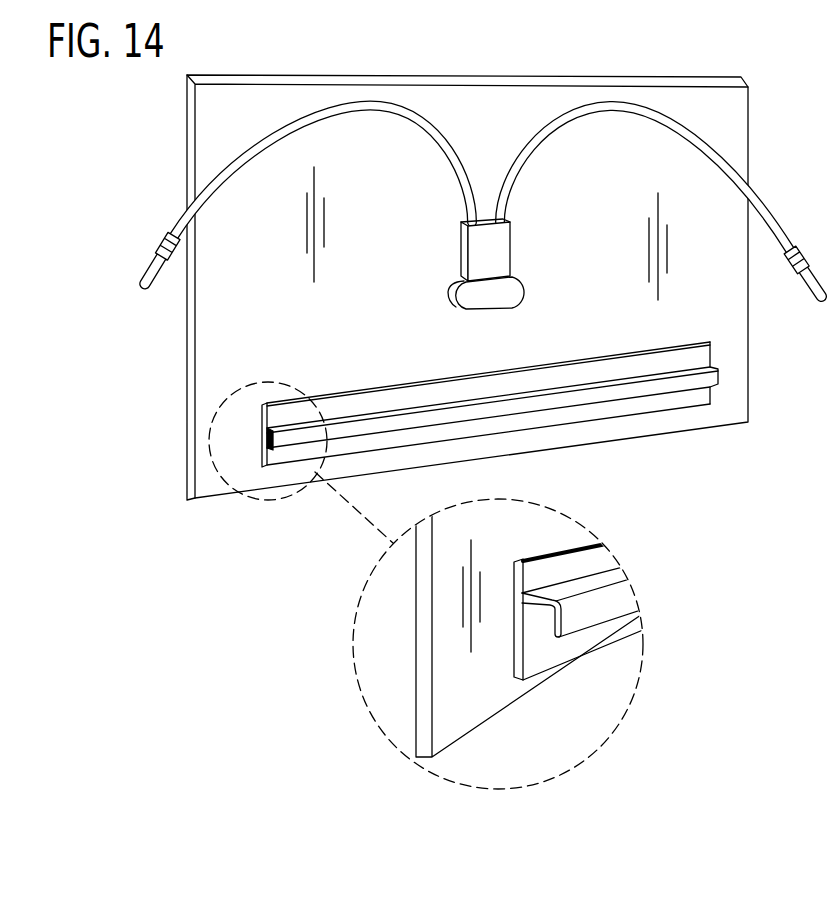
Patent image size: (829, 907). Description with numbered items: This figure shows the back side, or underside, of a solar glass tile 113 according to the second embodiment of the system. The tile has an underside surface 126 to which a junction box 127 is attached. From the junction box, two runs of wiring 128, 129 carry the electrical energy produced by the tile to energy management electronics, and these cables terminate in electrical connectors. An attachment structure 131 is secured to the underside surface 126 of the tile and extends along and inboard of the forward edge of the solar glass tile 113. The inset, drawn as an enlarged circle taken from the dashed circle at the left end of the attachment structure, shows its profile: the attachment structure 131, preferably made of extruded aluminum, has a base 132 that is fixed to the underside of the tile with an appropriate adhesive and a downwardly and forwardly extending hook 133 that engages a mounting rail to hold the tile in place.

The solar glass tile 113 is at (483, 255).
The underside surface 126 is at (313, 339).
The junction box 127 is at (483, 252).
The wiring 128 is at (623, 110).
The wiring 129 is at (347, 104).
The attachment structure 131 is at (545, 378).
The base 132 is at (538, 650).
The hook 133 is at (589, 605).